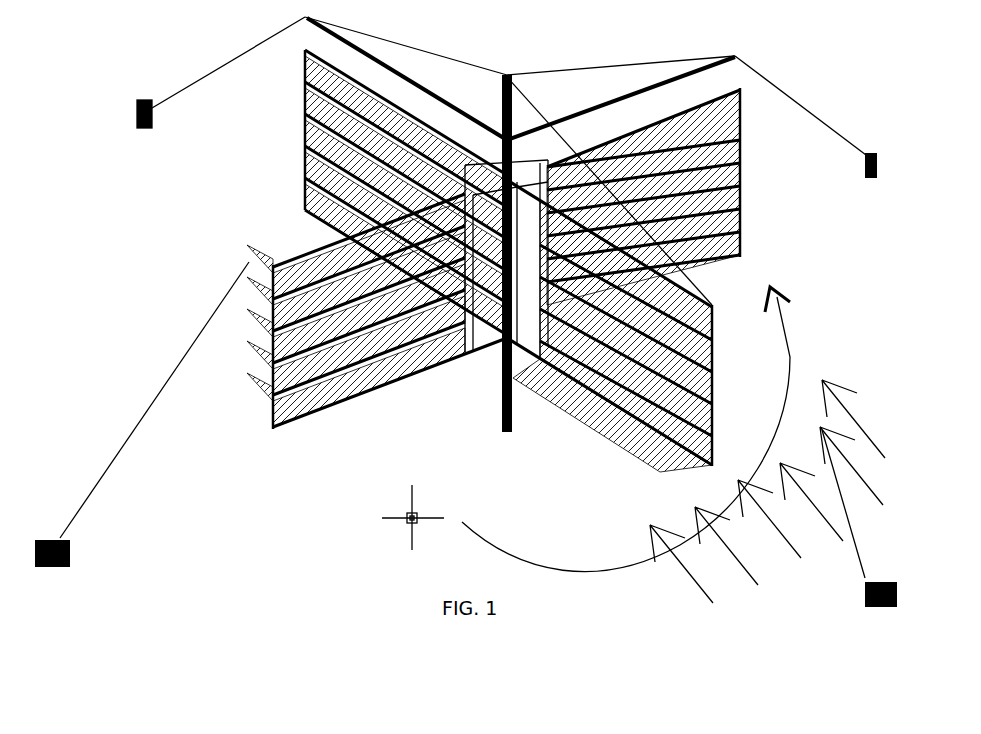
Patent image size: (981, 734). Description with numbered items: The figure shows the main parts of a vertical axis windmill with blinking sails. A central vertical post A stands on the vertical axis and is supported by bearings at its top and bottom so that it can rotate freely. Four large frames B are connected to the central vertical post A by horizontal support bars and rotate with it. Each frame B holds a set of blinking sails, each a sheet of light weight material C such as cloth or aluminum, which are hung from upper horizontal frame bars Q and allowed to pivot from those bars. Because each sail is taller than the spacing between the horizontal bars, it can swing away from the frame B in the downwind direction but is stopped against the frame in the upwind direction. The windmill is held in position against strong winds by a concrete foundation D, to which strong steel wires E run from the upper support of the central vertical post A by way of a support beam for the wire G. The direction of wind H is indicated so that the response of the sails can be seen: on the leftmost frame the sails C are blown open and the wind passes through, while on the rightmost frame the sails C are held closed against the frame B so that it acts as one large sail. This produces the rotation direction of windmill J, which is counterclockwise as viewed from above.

The central vertical post A is at (507, 434).
The frame B is at (314, 412).
The sheet of light weight material C is at (242, 372).
The concrete foundation D is at (74, 553).
The strong steel wire E is at (132, 443).
The support beam for the wire G is at (737, 60).
The direction of wind H is at (690, 583).
The rotation direction of windmill J is at (793, 327).
The horizontal frame bar Q is at (373, 367).